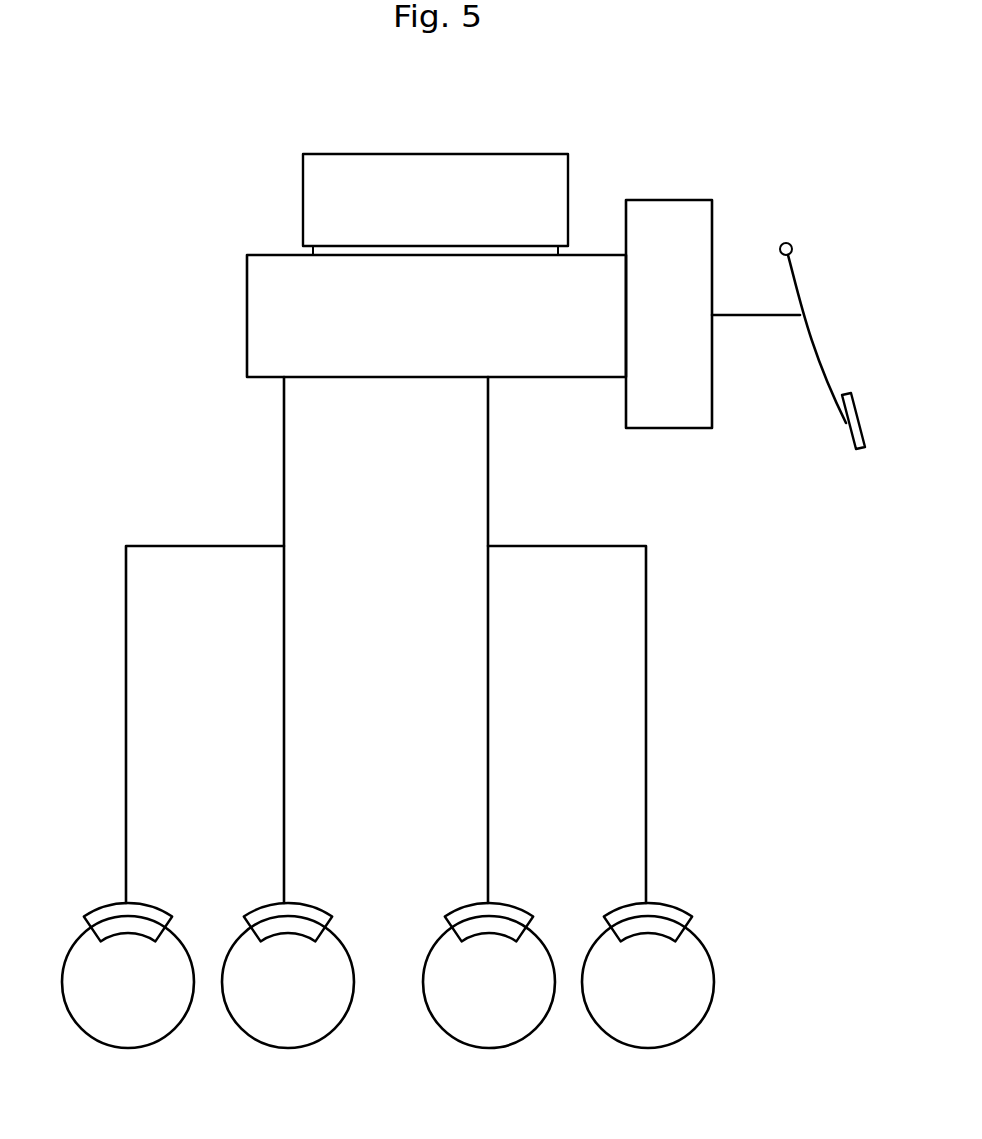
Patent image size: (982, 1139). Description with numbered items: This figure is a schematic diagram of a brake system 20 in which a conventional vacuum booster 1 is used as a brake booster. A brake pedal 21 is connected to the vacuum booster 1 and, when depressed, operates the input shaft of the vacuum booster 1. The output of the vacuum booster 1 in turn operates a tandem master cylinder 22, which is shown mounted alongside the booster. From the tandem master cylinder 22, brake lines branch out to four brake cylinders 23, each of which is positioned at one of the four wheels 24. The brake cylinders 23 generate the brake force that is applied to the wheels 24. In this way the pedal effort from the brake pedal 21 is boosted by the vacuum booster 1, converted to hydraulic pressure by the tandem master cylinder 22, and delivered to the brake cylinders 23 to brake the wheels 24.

The vacuum booster 1 is at (687, 428).
The brake system 20 is at (128, 408).
The brake pedal 21 is at (852, 445).
The tandem master cylinder 22 is at (402, 363).
The brake cylinders 23 is at (262, 912).
The wheels 24 is at (252, 1018).